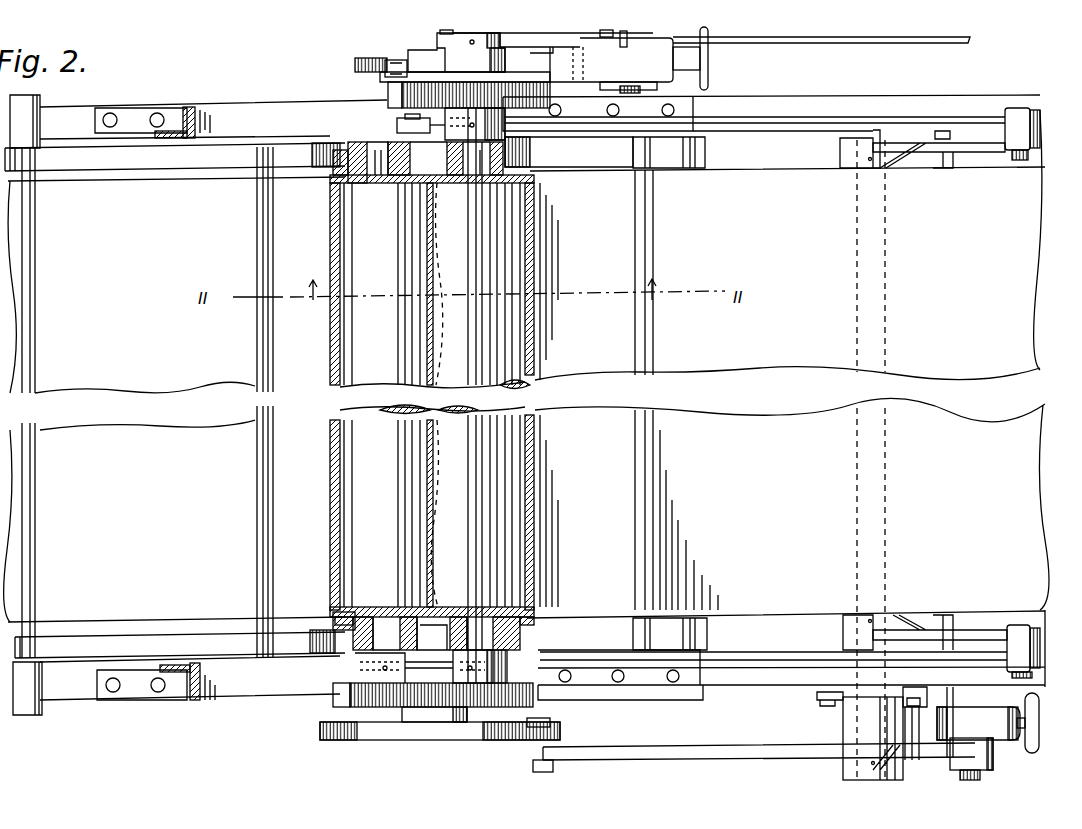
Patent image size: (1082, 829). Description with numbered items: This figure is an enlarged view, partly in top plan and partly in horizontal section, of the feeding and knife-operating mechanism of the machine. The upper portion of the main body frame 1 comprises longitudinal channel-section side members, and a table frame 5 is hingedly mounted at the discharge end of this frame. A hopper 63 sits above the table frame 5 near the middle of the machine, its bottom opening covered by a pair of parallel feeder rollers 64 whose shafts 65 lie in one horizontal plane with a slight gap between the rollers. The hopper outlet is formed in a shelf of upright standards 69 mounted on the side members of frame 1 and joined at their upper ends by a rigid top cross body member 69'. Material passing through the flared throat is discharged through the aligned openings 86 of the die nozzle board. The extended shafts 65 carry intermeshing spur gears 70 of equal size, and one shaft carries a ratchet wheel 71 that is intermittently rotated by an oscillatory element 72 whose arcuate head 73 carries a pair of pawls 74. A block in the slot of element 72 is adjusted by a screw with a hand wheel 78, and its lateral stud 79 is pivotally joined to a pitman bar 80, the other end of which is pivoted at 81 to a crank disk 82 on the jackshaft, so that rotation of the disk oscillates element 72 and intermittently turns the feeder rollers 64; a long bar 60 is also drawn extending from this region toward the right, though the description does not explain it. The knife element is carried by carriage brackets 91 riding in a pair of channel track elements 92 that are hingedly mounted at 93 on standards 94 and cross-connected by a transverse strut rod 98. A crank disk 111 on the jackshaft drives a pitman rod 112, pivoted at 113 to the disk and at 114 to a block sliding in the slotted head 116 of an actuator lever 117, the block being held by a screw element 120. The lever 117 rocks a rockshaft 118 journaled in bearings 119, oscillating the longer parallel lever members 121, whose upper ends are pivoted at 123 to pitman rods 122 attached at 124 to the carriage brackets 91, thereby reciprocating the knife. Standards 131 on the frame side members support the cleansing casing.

The upper portion of the main body frame 1 is at (238, 107).
The table frame 5 is at (207, 182).
The rod 60 is at (930, 43).
The hopper 63 is at (330, 432).
The feeder rollers 64 is at (458, 516).
The shafts 65 is at (473, 172).
The upright supporting brackets or standards 69 is at (606, 432).
The rigid top cross body member 69' is at (676, 390).
The intermeshing spur gears 70 is at (333, 700).
The ratchet wheel 71 is at (545, 97).
The oscillatory element 72 is at (658, 45).
The arcuate head 73 is at (378, 78).
The pawls 74 is at (392, 96).
The hand wheel 78 is at (710, 68).
The lateral stud 79 is at (605, 36).
The pitman bar 80 is at (546, 38).
The pivotal attachment 81 is at (447, 33).
The crank disk 82 is at (413, 58).
The openings 86 is at (436, 288).
The carriage brackets 91 is at (322, 143).
The track elements 92 is at (106, 162).
The hinge mounting 93 is at (30, 445).
The standards 94 is at (40, 108).
The transverse strut bar or rod 98 is at (258, 331).
The crank disk 111 is at (357, 741).
The pitman rod 112 is at (760, 752).
The pivotal attachment 113 is at (540, 768).
The pivotal attachment 114 is at (955, 760).
The slotted head 116 is at (990, 710).
The actuator lever 117 is at (913, 733).
The rockshaft 118 is at (850, 157).
The bearings 119 is at (842, 714).
The screw element 120 is at (1028, 748).
The lever members 121 is at (924, 148).
The pitman rods 122 is at (810, 117).
The pivotal attachment 123 is at (1016, 160).
The pivotal attachment 124 is at (334, 182).
The standards 131 is at (170, 108).